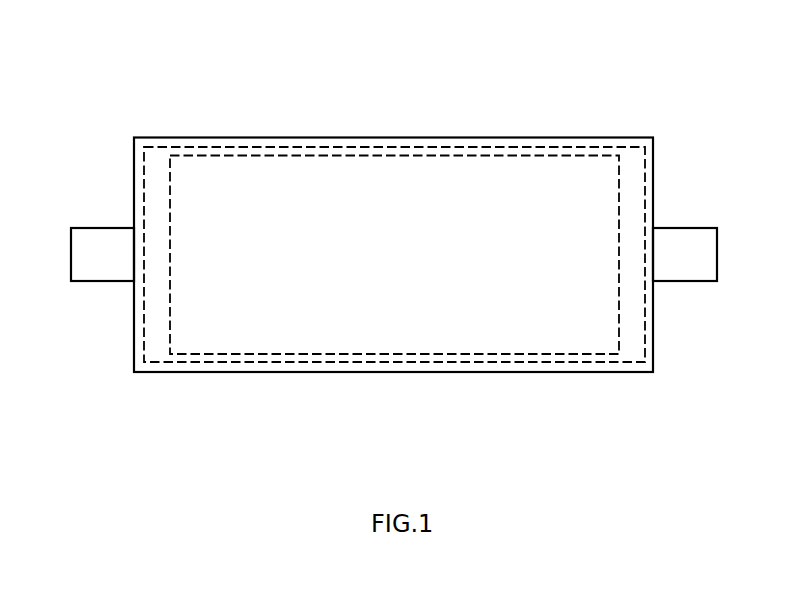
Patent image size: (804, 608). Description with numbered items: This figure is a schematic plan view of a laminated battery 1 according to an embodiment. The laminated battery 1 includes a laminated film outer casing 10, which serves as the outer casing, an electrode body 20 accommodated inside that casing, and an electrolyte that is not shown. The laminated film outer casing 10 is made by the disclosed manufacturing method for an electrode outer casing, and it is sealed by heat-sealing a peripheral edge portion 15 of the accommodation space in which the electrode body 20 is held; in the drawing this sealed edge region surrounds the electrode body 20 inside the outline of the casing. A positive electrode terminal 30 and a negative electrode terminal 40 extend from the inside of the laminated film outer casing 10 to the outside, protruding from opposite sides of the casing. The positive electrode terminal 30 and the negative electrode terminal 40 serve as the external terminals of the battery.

The laminated battery 1 is at (73, 30).
The laminated film outer casing 10 is at (203, 137).
The peripheral edge portion 15 is at (332, 143).
The electrode body 20 is at (470, 193).
The positive electrode terminal 30 is at (105, 235).
The negative electrode terminal 40 is at (672, 235).